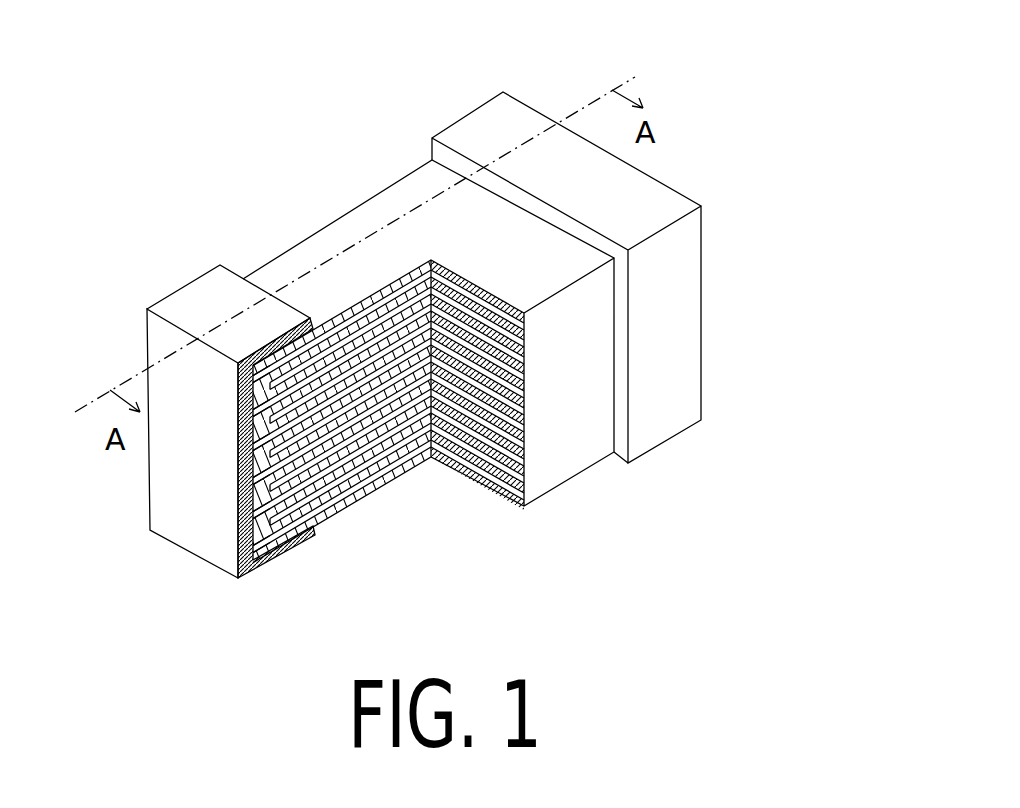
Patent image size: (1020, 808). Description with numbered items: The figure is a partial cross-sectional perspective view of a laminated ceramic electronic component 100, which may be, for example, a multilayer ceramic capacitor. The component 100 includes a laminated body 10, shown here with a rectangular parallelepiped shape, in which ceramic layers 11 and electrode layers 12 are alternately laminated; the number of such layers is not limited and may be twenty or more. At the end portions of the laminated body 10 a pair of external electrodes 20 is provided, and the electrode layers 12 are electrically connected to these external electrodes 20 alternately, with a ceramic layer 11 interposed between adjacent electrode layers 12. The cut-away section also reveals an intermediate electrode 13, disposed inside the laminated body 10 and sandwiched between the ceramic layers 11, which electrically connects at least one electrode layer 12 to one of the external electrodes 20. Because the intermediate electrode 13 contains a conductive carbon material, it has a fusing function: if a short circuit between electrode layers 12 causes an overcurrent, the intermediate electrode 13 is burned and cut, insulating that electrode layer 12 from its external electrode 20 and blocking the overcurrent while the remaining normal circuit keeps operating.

The laminated ceramic electronic component 100 is at (683, 21).
The laminated body 10 is at (377, 387).
The ceramic layer 11 is at (457, 430).
The electrode layer 12 is at (339, 398).
The intermediate electrode 13 is at (245, 495).
The external electrode 20 is at (207, 302).